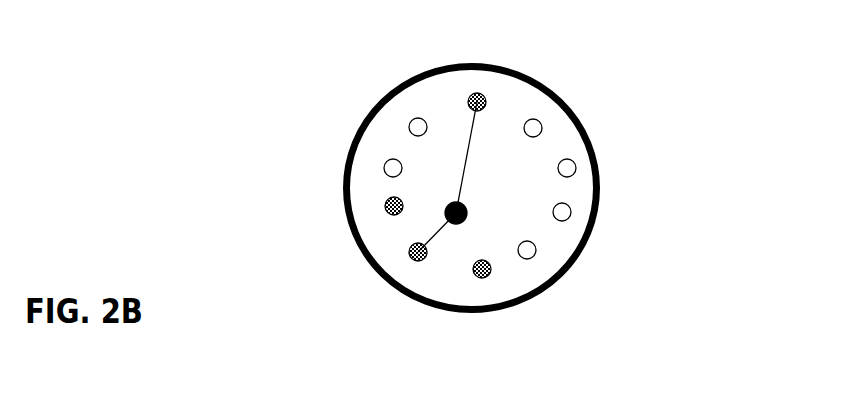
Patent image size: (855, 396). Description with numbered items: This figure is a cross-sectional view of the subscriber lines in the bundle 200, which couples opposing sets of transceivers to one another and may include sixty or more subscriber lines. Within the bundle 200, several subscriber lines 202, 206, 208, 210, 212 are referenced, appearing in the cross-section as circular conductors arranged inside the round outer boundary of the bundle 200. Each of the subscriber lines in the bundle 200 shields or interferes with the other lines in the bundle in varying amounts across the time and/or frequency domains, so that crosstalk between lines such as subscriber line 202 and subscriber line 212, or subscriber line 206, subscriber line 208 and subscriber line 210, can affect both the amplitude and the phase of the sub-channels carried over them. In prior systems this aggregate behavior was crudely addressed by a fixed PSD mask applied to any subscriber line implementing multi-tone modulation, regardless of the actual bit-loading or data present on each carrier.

The bundle 200 is at (590, 118).
The subscriber line 202 is at (477, 102).
The subscriber line 206 is at (388, 212).
The subscriber line 208 is at (412, 258).
The subscriber line 210 is at (480, 278).
The subscriber line 212 is at (466, 208).